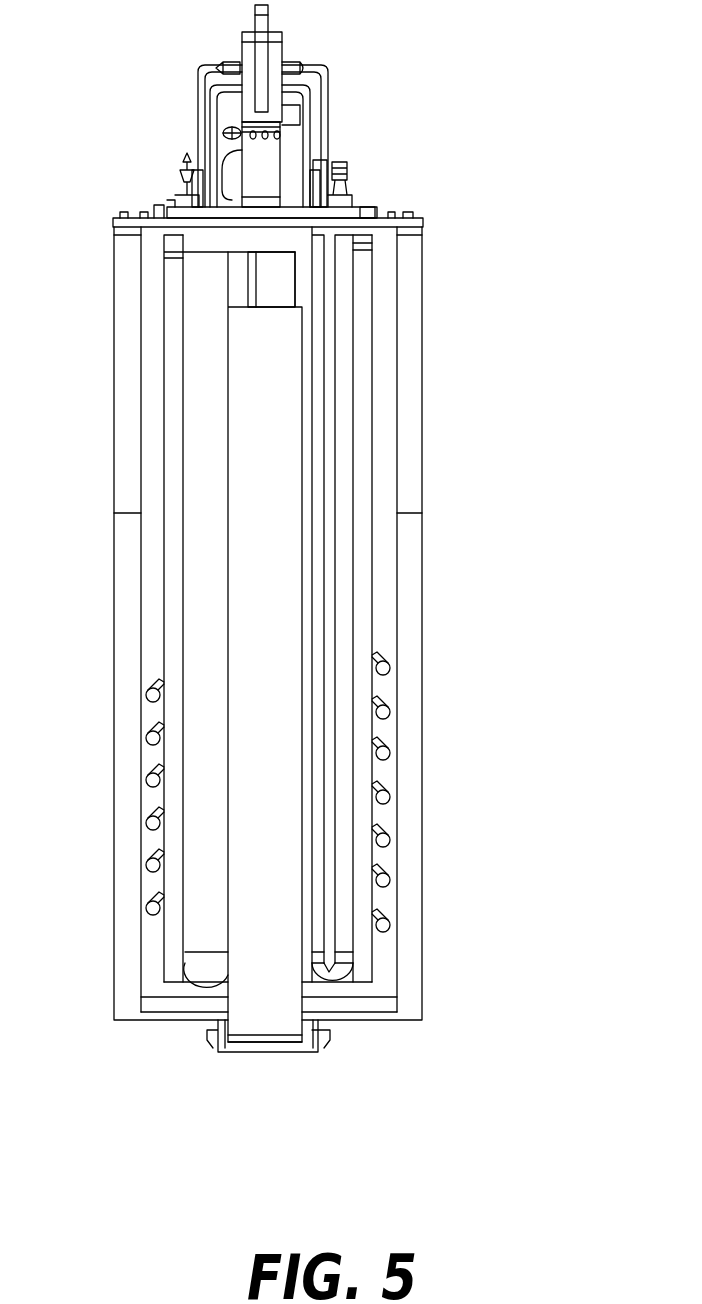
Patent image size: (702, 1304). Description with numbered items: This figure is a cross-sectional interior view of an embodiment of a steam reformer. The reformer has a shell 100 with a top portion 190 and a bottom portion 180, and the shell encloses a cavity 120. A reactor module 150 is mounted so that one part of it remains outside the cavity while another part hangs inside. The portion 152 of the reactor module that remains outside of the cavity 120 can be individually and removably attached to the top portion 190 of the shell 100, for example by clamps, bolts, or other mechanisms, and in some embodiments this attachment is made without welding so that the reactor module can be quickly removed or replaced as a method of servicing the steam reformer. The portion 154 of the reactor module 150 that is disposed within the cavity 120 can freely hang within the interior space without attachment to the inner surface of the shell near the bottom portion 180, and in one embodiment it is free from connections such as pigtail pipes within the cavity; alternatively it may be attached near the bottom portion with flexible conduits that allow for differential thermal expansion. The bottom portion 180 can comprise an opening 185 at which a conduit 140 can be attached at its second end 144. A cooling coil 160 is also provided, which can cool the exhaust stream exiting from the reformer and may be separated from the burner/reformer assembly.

The shell 100 is at (463, 470).
The cavity 120 is at (295, 295).
The conduit 140 is at (303, 567).
The second end 144 is at (225, 1052).
The reactor module 150 is at (205, 292).
The portion 152 is at (367, 208).
The portion 154 is at (182, 385).
The cooling coil 160 is at (386, 842).
The bottom portion 180 is at (393, 1022).
The opening 185 is at (327, 1022).
The top portion 190 is at (402, 213).